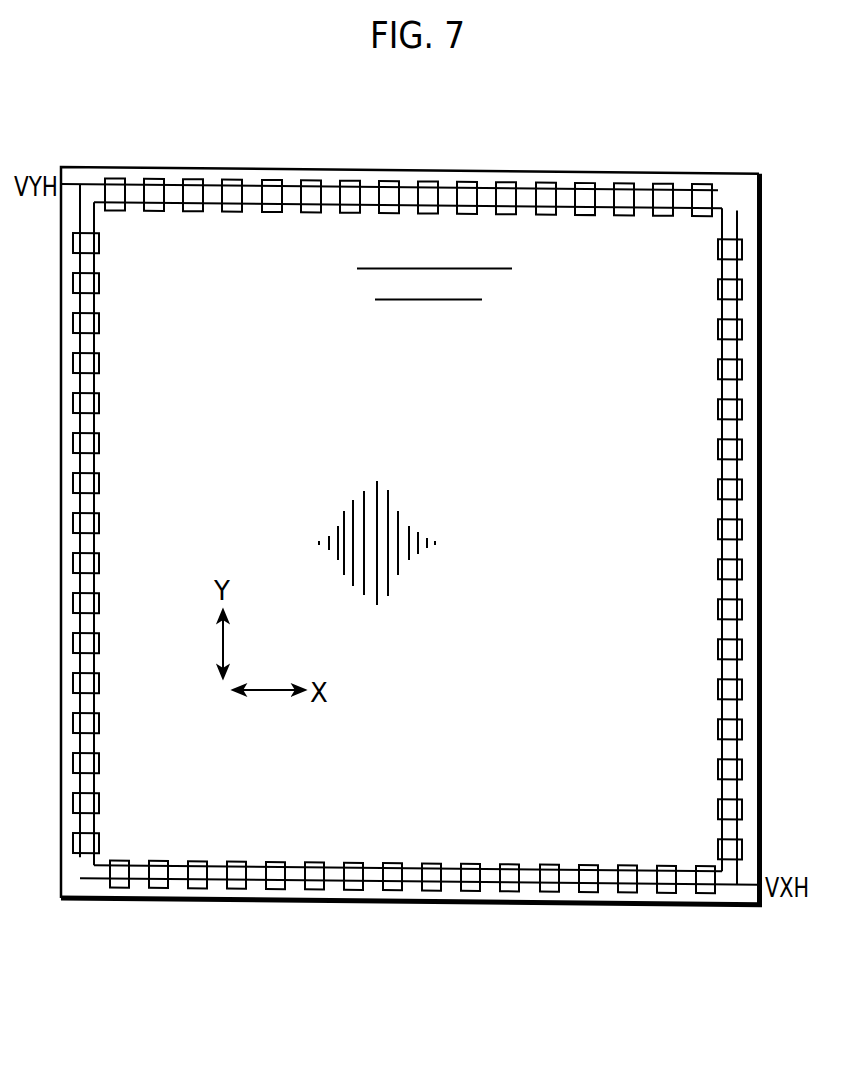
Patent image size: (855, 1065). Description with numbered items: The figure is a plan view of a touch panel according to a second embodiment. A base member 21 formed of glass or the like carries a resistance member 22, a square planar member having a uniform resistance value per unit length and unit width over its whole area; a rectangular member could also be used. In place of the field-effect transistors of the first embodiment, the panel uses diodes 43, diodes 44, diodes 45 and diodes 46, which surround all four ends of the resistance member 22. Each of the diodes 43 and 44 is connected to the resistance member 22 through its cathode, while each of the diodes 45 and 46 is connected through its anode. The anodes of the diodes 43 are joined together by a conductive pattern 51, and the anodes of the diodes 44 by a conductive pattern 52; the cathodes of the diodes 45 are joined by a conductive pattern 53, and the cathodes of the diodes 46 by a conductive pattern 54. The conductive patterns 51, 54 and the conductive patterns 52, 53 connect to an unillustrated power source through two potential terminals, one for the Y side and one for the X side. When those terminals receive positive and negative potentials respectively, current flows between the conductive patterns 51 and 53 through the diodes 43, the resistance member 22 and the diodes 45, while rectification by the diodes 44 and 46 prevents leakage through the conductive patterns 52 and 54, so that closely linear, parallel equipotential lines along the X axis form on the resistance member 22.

The base member 21 is at (252, 177).
The resistance member 22 is at (328, 250).
The diodes 43 is at (140, 124).
The diodes 44 is at (742, 327).
The diodes 45 is at (194, 888).
The diodes 46 is at (73, 322).
The conductive pattern 51 is at (410, 185).
The conductive pattern 52 is at (667, 427).
The conductive pattern 53 is at (530, 884).
The conductive pattern 54 is at (81, 422).